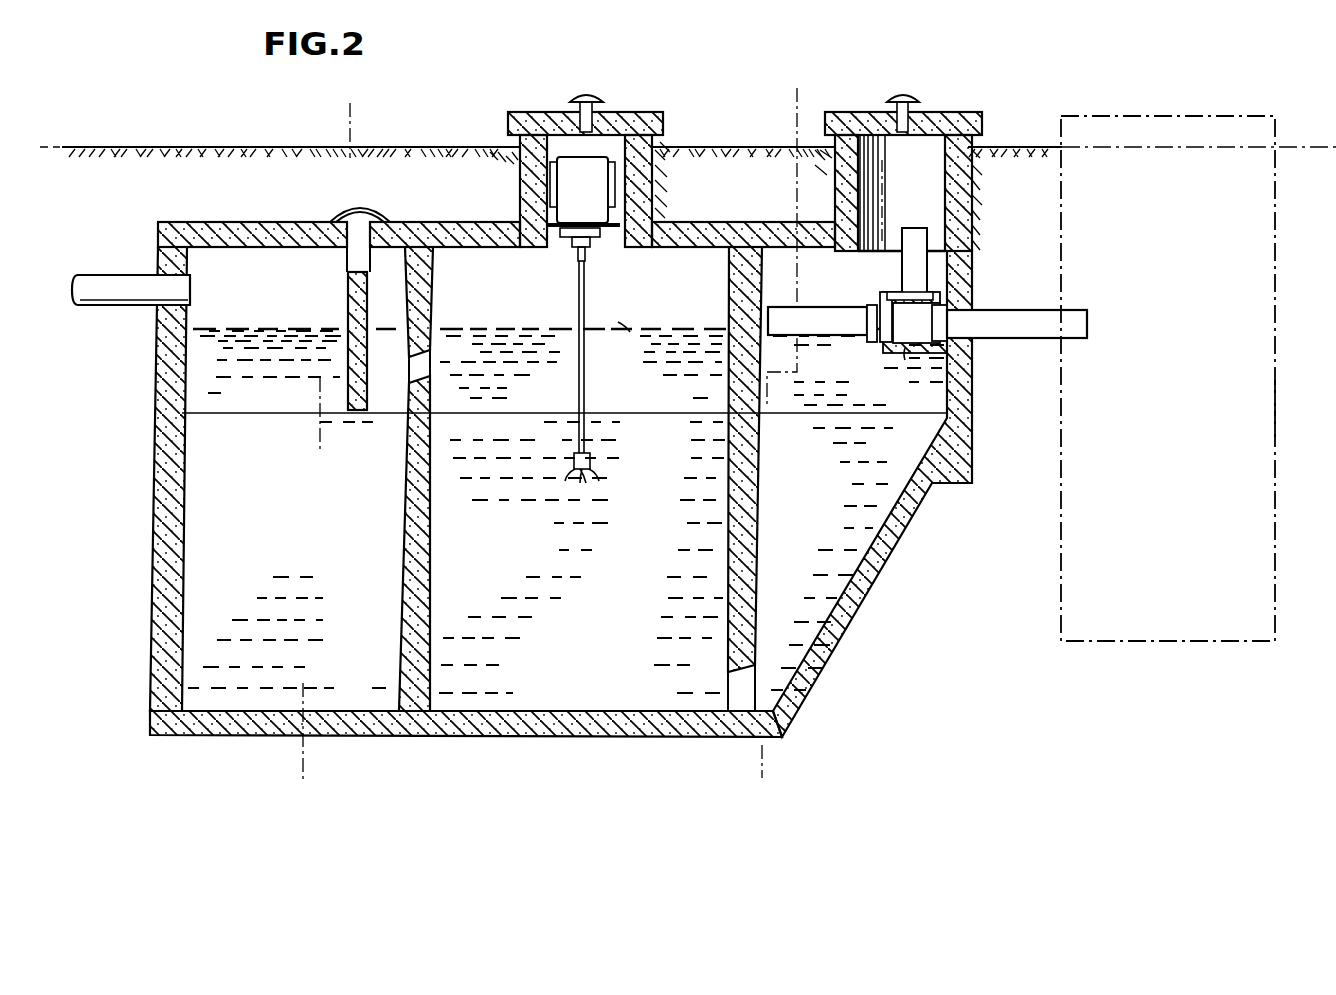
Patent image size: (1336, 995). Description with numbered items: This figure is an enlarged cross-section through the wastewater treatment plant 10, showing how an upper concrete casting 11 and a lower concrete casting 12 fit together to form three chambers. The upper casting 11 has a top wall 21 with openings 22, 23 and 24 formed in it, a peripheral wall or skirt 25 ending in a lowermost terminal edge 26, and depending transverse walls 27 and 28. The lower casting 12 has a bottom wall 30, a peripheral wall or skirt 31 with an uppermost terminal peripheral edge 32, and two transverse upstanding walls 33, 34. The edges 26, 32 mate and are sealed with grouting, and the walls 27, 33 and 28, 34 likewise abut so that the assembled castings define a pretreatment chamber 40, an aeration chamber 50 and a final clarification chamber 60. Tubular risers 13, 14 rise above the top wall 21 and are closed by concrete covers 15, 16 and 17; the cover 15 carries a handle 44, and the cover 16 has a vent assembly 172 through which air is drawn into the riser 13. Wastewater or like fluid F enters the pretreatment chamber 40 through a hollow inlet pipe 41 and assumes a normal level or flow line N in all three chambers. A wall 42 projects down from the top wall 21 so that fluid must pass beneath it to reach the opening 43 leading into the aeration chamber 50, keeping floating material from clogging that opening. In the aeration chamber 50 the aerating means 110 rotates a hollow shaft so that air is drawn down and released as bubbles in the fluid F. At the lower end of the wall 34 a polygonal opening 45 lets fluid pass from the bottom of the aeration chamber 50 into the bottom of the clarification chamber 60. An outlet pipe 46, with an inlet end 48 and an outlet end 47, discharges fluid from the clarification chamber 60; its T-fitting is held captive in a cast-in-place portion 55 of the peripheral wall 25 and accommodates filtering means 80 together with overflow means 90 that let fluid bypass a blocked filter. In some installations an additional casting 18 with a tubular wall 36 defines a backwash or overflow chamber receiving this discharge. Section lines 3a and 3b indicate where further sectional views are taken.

The wastewater treatment plant 10 is at (948, 76).
The upper concrete casting 11 is at (496, 233).
The lower concrete casting 12 is at (466, 721).
The riser 13 is at (650, 182).
The riser 14 is at (838, 168).
The concrete cover 15 is at (399, 222).
The concrete cover 16 is at (599, 153).
The concrete cover 17 is at (900, 181).
The additional concrete casting 18 is at (1273, 412).
The top wall 21 is at (700, 238).
The opening 22 is at (304, 252).
The opening 23 is at (532, 252).
The opening 24 is at (845, 243).
The peripheral wall 25 is at (607, 494).
The lowermost terminal edge 26 is at (185, 422).
The depending transverse wall 27 is at (440, 252).
The depending transverse wall 28 is at (733, 300).
The bottom wall 30 is at (330, 708).
The peripheral wall 31 is at (568, 492).
The uppermost terminal peripheral edge 32 is at (454, 406).
The transverse upstanding wall 33 is at (429, 479).
The transverse upstanding wall 34 is at (726, 479).
The tubular wall 36 is at (1192, 378).
The pretreatment chamber 40 is at (310, 541).
The hollow pipe 41 is at (125, 284).
The wall 42 is at (348, 299).
The opening 43 is at (410, 378).
The handle 44 is at (354, 208).
The polygonal shaped opening 45 is at (726, 679).
The outlet pipe 46 is at (956, 283).
The outlet end 47 is at (1088, 326).
The inlet end 48 is at (960, 312).
The aeration chamber 50 is at (535, 568).
The cast-in-place portion 55 is at (905, 348).
The final clarification chamber 60 is at (828, 494).
The filtering means 80 is at (818, 303).
The overflow means 90 is at (915, 226).
The aerating means 110 is at (598, 278).
The vent assembly 172 is at (600, 100).
The section line 3a is at (348, 780).
The section line 3b is at (762, 778).
The normal flow line N is at (624, 325).
The fluid F is at (274, 392).